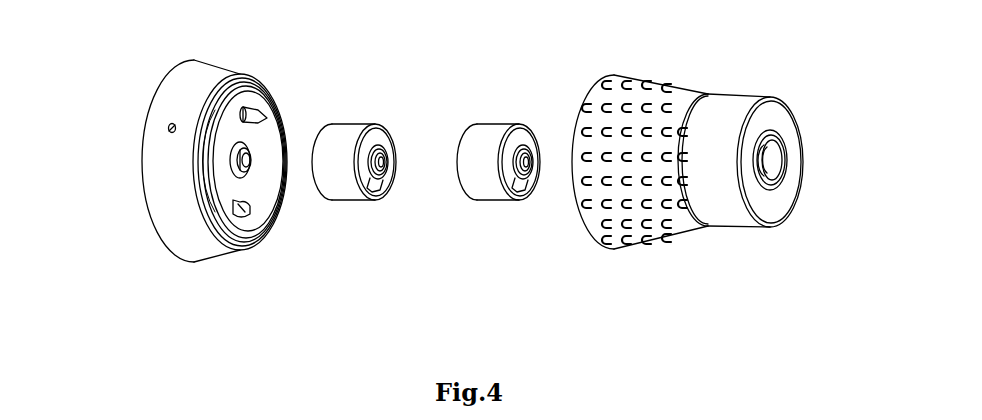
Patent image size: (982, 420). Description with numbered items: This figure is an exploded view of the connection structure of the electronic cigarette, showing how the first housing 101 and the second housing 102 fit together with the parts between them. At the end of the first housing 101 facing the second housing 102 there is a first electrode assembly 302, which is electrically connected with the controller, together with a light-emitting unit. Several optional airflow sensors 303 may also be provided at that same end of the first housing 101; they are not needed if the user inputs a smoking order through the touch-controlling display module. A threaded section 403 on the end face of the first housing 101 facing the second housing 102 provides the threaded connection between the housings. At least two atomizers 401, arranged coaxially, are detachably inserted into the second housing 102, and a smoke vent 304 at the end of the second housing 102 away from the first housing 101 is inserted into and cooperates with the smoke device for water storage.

The first housing 101 is at (193, 237).
The second housing 102 is at (651, 215).
The first electrode assembly 302 is at (252, 157).
The airflow sensor 303 is at (248, 212).
The smoke vent 304 is at (770, 158).
The atomizer 401 is at (343, 140).
The threaded section 403 is at (208, 177).